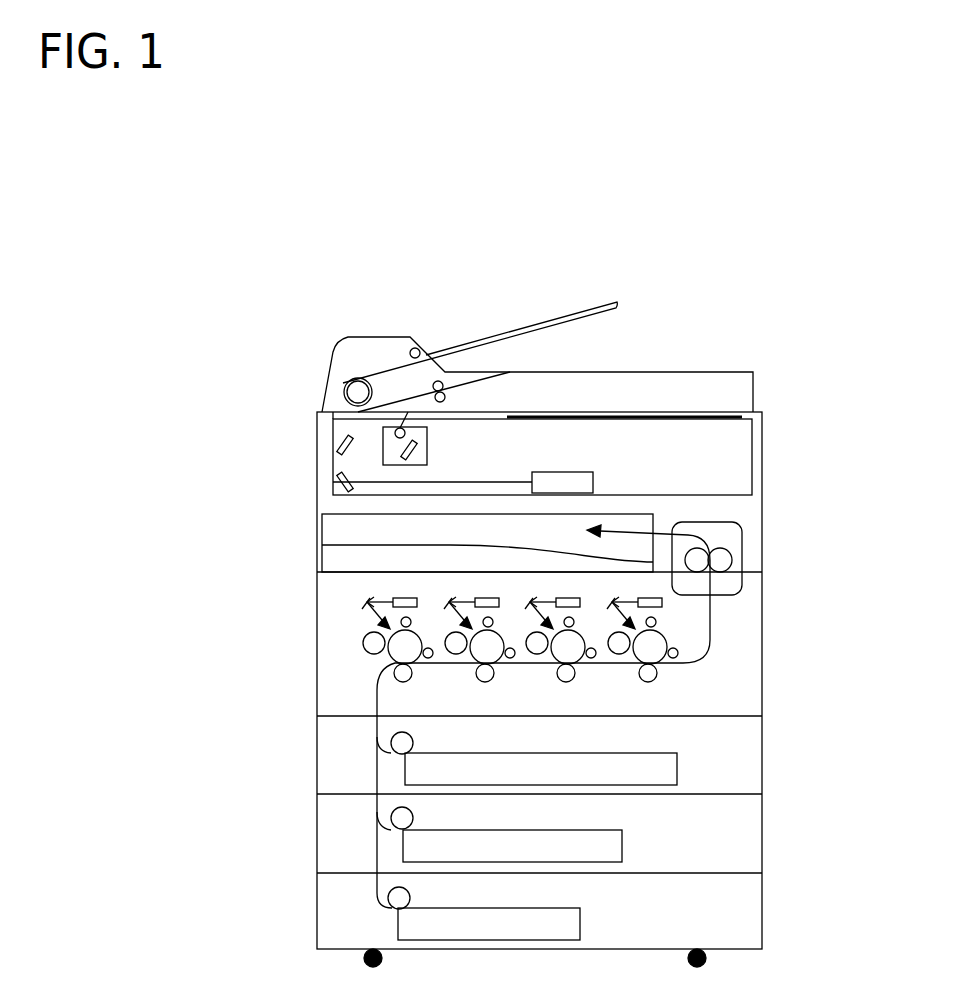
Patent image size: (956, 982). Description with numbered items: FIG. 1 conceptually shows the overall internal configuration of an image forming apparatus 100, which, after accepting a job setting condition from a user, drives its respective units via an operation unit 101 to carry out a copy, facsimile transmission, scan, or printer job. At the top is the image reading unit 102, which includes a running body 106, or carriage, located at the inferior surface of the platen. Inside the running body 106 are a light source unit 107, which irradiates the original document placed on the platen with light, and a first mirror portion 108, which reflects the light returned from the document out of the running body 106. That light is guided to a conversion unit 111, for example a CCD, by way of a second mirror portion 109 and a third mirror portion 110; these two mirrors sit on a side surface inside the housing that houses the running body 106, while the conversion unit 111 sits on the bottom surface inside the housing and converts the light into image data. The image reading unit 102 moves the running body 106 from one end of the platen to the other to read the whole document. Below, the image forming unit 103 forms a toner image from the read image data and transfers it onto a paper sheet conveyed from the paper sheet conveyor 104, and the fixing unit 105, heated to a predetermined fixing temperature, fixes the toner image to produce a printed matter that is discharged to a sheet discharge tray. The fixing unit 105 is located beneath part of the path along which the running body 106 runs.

The image forming apparatus 100 is at (546, 240).
The operation unit 101 is at (720, 417).
The image reading unit 102 is at (283, 390).
The image forming unit 103 is at (297, 585).
The paper sheet conveyor 104 is at (297, 713).
The fixing unit 105 is at (762, 553).
The running body 106 is at (428, 432).
The light source unit 107 is at (395, 433).
The first mirror portion 108 is at (417, 452).
The second mirror portion 109 is at (337, 445).
The third mirror portion 110 is at (337, 487).
The conversion unit 111 is at (593, 482).